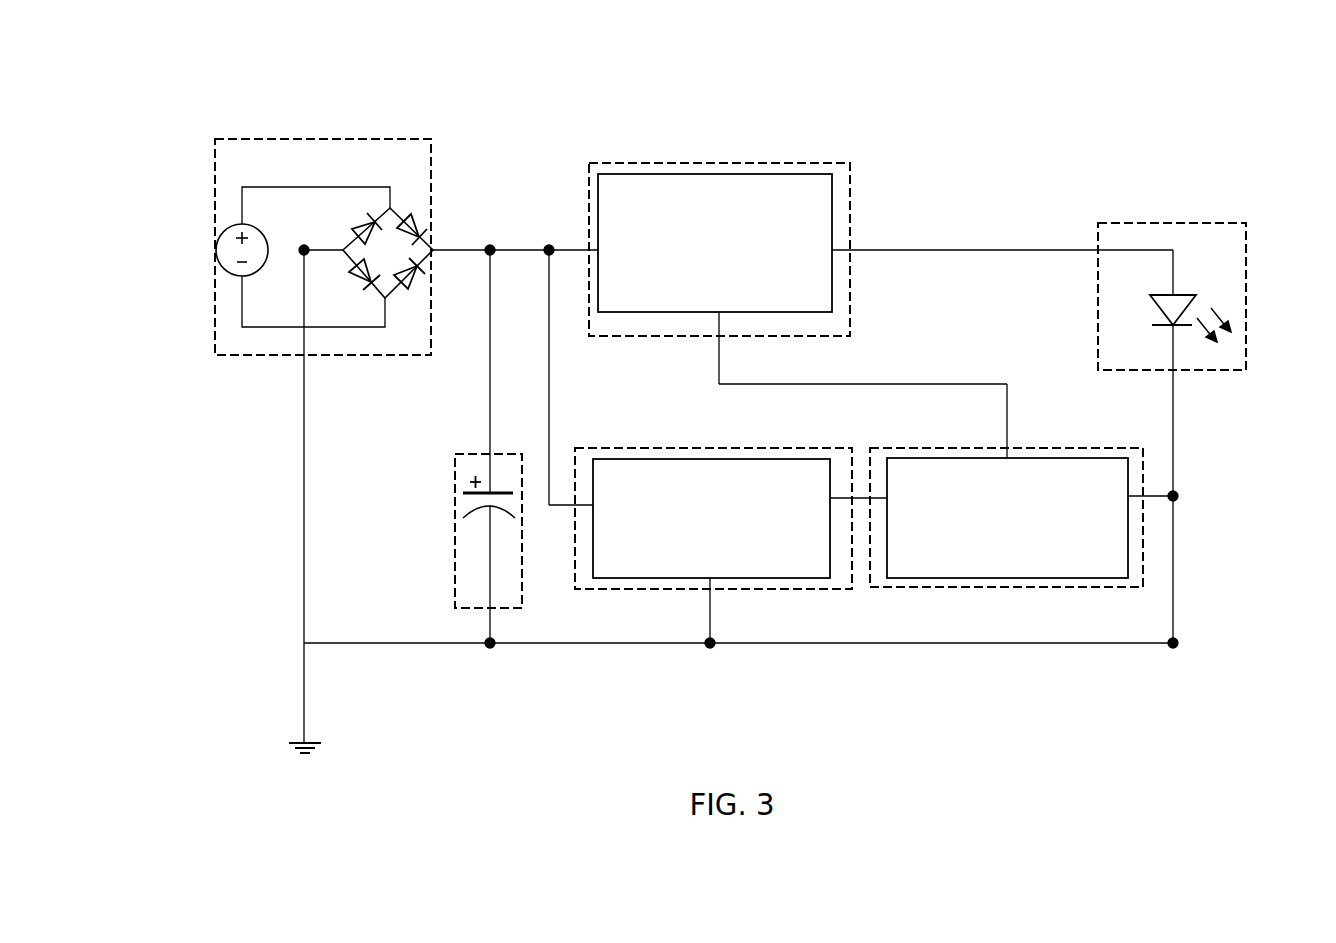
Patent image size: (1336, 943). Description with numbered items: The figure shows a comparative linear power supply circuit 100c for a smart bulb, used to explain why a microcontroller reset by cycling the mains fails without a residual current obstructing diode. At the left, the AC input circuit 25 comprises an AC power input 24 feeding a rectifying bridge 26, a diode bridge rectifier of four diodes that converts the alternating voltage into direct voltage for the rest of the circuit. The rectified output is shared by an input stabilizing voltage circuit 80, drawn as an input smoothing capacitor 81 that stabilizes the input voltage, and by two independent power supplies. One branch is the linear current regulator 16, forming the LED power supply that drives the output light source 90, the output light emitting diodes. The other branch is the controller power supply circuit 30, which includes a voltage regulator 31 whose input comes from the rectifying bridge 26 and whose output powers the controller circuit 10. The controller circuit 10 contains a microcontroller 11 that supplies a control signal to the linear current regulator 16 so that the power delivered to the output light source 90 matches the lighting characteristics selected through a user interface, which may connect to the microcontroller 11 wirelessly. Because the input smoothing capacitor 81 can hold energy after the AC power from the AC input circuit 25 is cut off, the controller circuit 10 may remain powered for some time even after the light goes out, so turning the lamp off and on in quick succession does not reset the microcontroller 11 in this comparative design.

The circuit 100c is at (227, 57).
The AC input circuit 25 is at (325, 138).
The AC power input 24 is at (240, 248).
The rectifying bridge 26 is at (399, 265).
The linear current regulator 16 is at (728, 268).
The output light source 90 is at (1246, 242).
The controller power supply circuit 30 is at (637, 589).
The voltage regulator 31 is at (726, 524).
The controller circuit 10 is at (1013, 587).
The microcontroller 11 is at (1021, 559).
The input stabilizing voltage circuit 80 is at (482, 608).
The input smoothing capacitor 81 is at (478, 522).